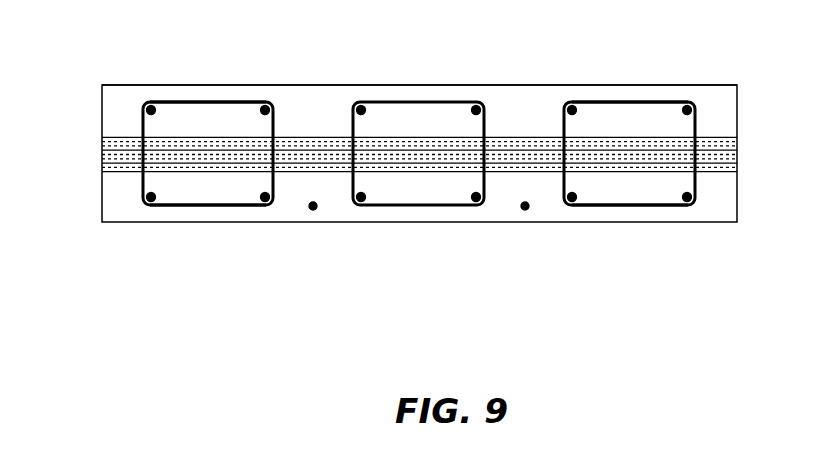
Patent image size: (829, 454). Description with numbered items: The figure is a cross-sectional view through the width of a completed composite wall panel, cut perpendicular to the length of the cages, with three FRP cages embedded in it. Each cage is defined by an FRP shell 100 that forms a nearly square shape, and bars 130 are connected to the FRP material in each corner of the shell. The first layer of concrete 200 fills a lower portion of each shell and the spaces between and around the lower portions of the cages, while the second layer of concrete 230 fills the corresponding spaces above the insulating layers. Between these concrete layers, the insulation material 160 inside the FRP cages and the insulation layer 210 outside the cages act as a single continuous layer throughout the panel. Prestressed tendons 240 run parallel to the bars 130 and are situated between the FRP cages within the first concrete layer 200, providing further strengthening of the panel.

The FRP shell 100 is at (232, 207).
The bars 130 is at (264, 108).
The insulation material 160 is at (205, 150).
The first layer of concrete 200 is at (117, 201).
The insulation layer 210 is at (117, 150).
The second layer of concrete 230 is at (117, 102).
The prestressed tendons 240 is at (315, 208).